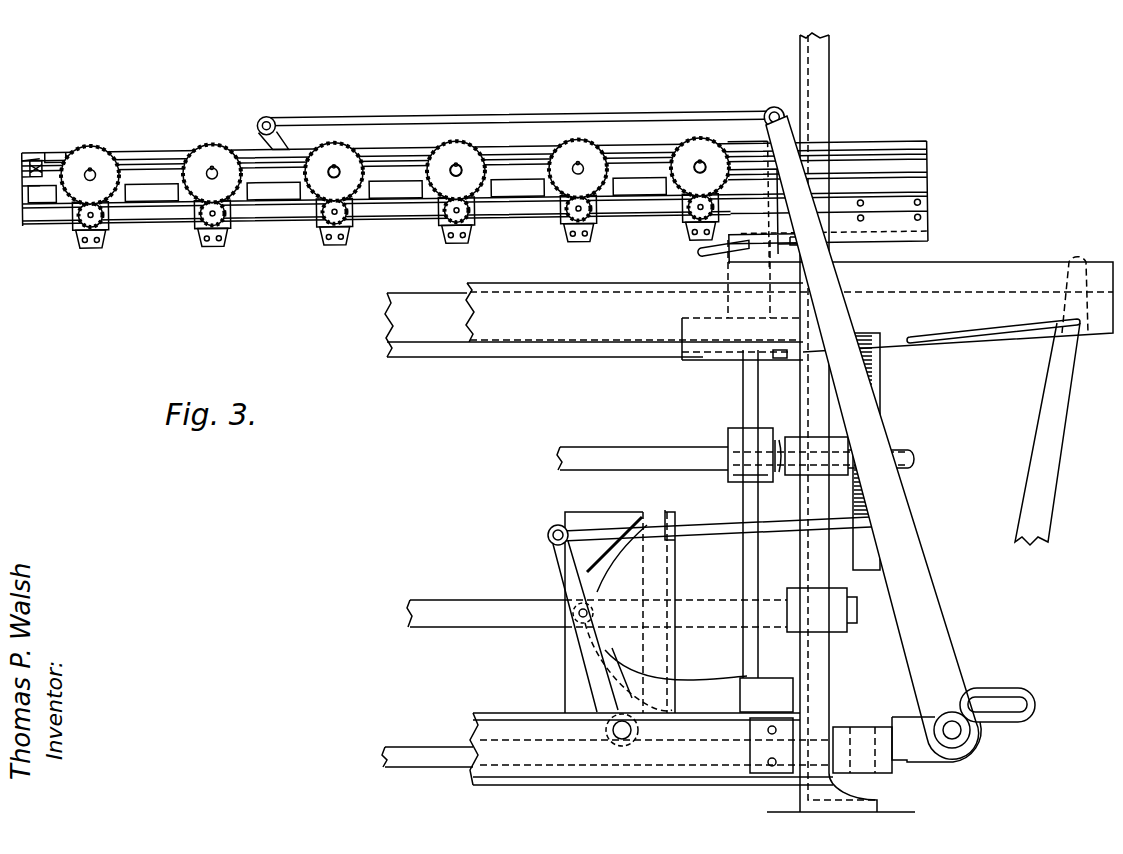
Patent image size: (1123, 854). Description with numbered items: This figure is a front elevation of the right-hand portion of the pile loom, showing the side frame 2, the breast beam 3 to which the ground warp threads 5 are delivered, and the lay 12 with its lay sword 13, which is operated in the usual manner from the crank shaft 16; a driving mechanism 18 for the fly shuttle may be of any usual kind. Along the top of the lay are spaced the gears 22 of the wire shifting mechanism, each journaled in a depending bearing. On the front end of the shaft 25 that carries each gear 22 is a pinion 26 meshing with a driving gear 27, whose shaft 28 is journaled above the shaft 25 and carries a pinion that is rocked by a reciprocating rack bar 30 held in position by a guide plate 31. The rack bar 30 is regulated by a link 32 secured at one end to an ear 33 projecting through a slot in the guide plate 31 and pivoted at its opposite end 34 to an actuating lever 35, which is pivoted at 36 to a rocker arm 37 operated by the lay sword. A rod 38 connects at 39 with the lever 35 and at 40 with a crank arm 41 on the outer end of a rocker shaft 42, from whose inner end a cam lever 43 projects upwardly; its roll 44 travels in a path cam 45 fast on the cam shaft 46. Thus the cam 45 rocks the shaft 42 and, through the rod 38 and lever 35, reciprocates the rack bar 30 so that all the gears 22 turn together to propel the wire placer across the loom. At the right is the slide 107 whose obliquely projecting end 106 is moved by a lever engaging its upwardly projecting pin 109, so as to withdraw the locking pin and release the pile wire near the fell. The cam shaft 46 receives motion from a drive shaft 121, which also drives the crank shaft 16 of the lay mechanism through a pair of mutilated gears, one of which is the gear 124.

The side frame 2 is at (830, 45).
The breast beam 3 is at (750, 300).
The ground warp thread 5 is at (712, 240).
The lay 12 is at (380, 312).
The lay sword 13 is at (743, 572).
The crank shaft 16 is at (778, 444).
The driving mechanism 18 is at (1048, 483).
The gear 22 is at (108, 246).
The shaft 25 is at (72, 223).
The pinion 26 is at (112, 226).
The driving gear 27 is at (208, 162).
The shaft 28 is at (333, 169).
The rack bar 30 is at (42, 160).
The guide plate 31 is at (52, 154).
The link 32 is at (430, 121).
The ear 33 is at (260, 131).
The pivot 34 is at (775, 116).
The actuating lever 35 is at (921, 582).
The pivot 36 is at (964, 736).
The rocker arm 37 is at (925, 762).
The rod 38 is at (716, 529).
The connection 39 is at (903, 520).
The connection 40 is at (548, 535).
The crank arm 41 is at (560, 561).
The rocker shaft 42 is at (605, 732).
The cam lever 43 is at (590, 683).
The roll 44 is at (576, 620).
The path cam 45 is at (565, 667).
The cam shaft 46 is at (445, 600).
The obliquely projecting end 106 is at (698, 261).
The slide 107 is at (755, 256).
The pin 109 is at (800, 245).
The drive shaft 121 is at (588, 449).
The mutilated gear 124 is at (880, 388).